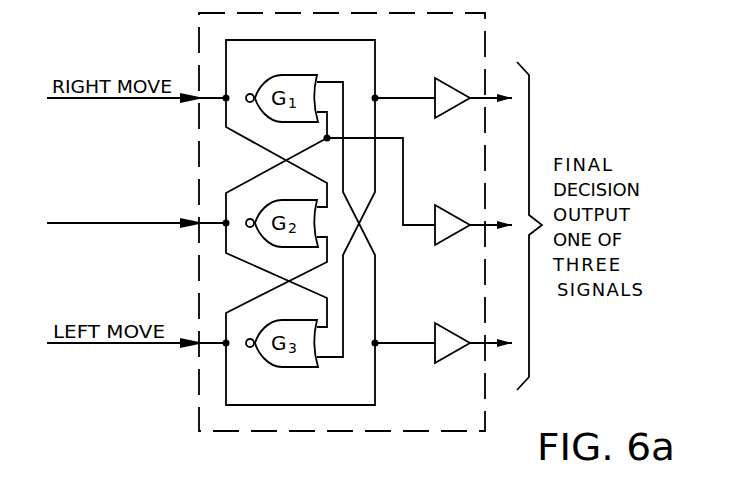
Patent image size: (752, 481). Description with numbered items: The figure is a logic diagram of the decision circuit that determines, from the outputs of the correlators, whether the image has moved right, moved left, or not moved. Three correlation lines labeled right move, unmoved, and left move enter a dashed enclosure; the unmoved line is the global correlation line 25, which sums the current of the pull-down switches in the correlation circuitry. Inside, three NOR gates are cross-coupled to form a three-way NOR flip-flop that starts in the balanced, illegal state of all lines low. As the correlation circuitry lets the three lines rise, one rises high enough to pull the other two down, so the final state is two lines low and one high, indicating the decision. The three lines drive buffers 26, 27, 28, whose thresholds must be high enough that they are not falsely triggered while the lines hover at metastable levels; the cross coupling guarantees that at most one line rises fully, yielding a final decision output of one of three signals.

The global correlation line 25 is at (166, 226).
The buffer 26 is at (458, 86).
The buffer 27 is at (459, 212).
The buffer 28 is at (460, 332).